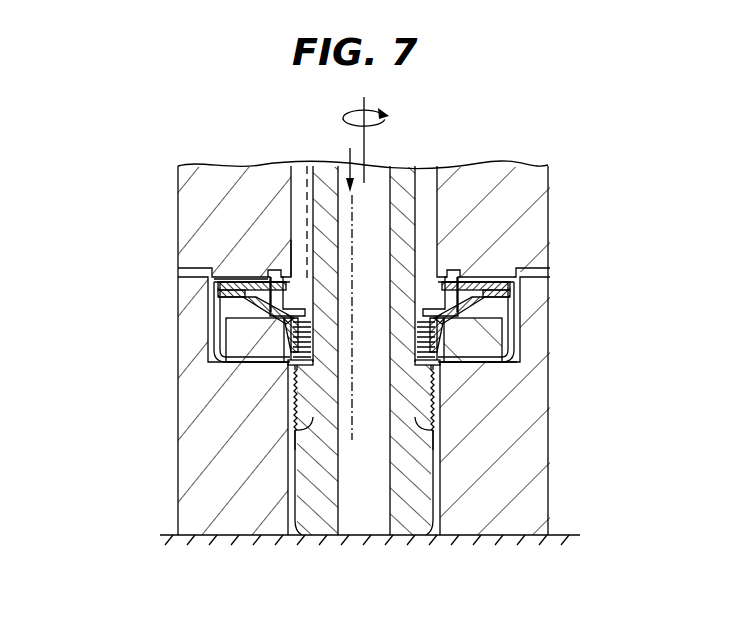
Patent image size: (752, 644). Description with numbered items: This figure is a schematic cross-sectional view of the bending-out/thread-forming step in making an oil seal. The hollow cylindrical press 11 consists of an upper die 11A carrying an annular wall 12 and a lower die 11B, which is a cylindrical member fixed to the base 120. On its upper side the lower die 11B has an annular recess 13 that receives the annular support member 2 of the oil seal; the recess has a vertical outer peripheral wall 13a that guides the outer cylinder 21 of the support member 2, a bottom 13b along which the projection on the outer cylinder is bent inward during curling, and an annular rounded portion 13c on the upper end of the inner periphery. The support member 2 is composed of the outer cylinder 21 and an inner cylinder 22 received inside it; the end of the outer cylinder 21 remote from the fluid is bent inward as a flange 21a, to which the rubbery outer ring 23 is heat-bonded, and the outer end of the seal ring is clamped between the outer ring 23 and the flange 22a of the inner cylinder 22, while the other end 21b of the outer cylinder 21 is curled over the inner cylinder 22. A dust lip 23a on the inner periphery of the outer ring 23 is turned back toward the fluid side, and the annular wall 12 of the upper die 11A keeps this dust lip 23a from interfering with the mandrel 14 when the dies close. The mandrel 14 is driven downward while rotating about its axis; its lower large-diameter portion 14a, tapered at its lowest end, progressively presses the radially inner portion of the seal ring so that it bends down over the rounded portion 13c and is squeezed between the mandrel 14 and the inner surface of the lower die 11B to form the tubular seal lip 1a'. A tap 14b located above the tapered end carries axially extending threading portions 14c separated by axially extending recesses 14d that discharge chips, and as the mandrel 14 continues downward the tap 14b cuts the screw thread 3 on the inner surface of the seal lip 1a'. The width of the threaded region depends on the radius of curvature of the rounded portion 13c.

The hollow cylindrical press 11 is at (648, 170).
The upper die 11A is at (548, 212).
The lower die 11B is at (543, 498).
The annular wall 12 is at (460, 279).
The annular recess 13 is at (512, 333).
The outer peripheral wall 13a is at (517, 307).
The bottom of the annular recess 13b is at (505, 350).
The annular rounded portion 13c is at (445, 342).
The tubular seal lip 1a' is at (523, 400).
The mandrel 14 is at (405, 530).
The large-diameter portion 14a is at (297, 527).
The tap 14b is at (100, 425).
The threading portions 14c is at (293, 425).
The recesses 14d is at (293, 387).
The annular support member 2 is at (203, 302).
The outer cylinder 21 is at (240, 318).
The flange 21a is at (245, 292).
The end of the outer cylinder 21b is at (288, 352).
The inner cylinder 22 is at (214, 337).
The flange 22a is at (228, 279).
The outer ring 23 is at (270, 283).
The dust lip 23a is at (293, 282).
The screw thread 3 is at (288, 368).
The base 120 is at (503, 536).